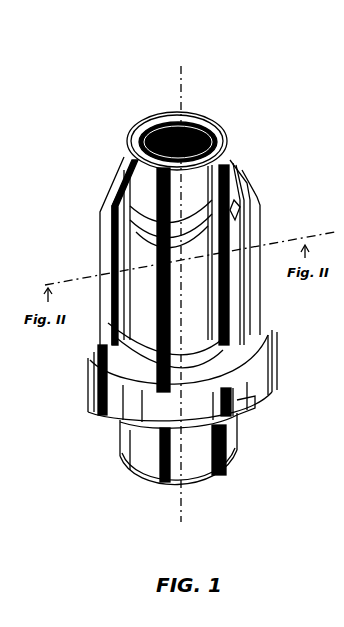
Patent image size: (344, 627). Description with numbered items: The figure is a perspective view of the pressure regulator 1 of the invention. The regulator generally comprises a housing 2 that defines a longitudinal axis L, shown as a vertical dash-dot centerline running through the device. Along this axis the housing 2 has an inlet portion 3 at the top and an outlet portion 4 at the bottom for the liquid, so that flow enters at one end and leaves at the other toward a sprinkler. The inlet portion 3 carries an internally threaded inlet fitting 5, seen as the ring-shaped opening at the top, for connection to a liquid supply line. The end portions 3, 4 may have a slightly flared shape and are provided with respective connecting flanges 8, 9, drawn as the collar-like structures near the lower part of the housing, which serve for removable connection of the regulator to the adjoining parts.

The pressure regulator 1 is at (248, 123).
The housing 2 is at (105, 212).
The inlet portion 3 is at (253, 235).
The outlet portion 4 is at (137, 448).
The inlet fitting 5 is at (152, 118).
The connecting flange 8 is at (273, 363).
The connecting flange 9 is at (237, 415).
The longitudinal axis L is at (183, 70).